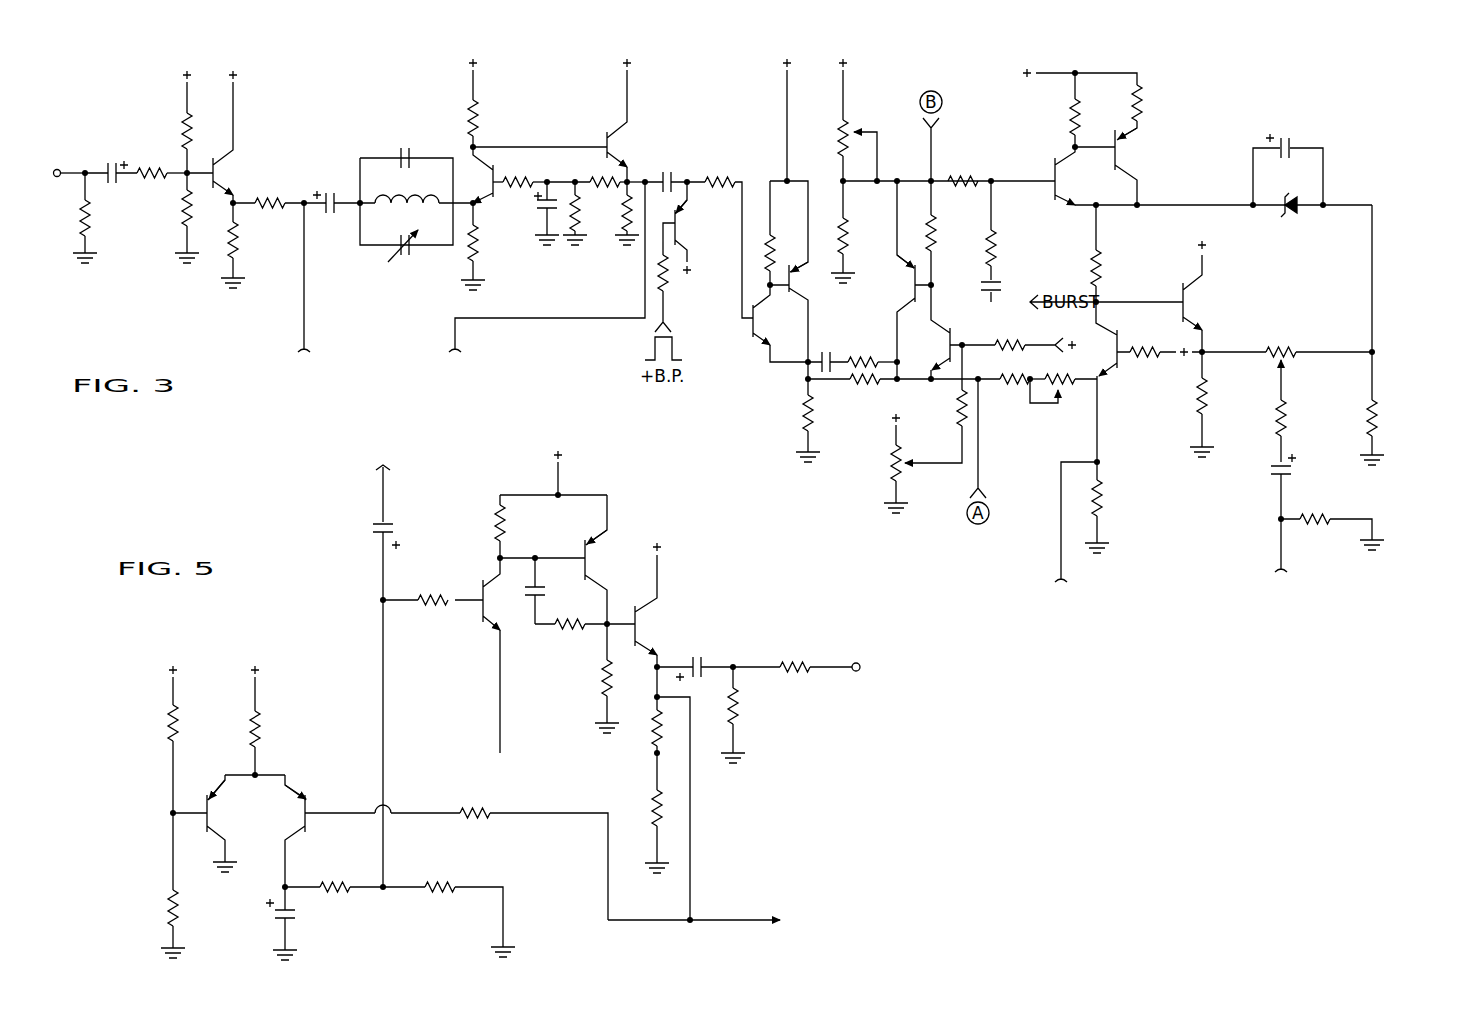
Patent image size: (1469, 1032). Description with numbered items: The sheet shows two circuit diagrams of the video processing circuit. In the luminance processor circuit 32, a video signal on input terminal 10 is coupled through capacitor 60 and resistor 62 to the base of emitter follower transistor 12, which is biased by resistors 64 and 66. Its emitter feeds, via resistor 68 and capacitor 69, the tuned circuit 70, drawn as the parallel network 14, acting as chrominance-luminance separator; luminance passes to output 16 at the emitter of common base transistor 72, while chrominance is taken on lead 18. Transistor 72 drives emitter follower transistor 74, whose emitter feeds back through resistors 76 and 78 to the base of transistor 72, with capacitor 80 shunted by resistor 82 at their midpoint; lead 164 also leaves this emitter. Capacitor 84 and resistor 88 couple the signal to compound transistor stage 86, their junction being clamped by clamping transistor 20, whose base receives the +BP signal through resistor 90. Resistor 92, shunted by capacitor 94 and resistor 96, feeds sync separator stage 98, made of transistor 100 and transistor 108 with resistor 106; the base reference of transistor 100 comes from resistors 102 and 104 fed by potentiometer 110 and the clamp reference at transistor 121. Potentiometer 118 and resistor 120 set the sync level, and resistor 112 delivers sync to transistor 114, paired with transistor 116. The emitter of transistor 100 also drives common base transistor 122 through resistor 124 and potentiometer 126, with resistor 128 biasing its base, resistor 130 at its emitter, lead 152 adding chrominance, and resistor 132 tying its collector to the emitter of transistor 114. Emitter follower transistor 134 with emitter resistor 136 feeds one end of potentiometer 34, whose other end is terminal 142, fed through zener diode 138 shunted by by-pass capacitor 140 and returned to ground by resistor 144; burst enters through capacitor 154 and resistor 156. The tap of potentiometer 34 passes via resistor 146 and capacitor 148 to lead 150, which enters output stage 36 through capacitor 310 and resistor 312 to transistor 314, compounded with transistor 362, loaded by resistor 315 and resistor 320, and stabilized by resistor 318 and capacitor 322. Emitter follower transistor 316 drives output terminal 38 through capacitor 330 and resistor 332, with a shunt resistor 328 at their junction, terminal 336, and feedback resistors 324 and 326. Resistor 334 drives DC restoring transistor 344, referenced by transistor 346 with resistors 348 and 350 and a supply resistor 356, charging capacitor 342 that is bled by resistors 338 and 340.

In FIG. 3, the input terminal 10 is at (58, 168).
In FIG. 3, the emitter follower transistor 12 is at (216, 179).
In FIG. 3, the tuned circuit 14 is at (406, 213).
In FIG. 3, the output 16 is at (462, 168).
In FIG. 3, the lead 18 is at (306, 290).
In FIG. 3, the clamping transistor 20 is at (694, 228).
In FIG. 3, the luminance processor circuit 32 is at (961, 254).
In FIG. 3, the potentiometer 34 is at (1282, 344).
In FIG. 5, the output stage 36 is at (633, 512).
In FIG. 5, the output terminal 38 is at (860, 658).
In FIG. 3, the capacitor 60 is at (112, 162).
In FIG. 3, the resistor 62 is at (150, 166).
In FIG. 3, the resistor 64 is at (196, 136).
In FIG. 3, the resistor 66 is at (180, 214).
In FIG. 3, the resistor 68 is at (266, 198).
In FIG. 3, the capacitor 69 is at (326, 196).
In FIG. 3, the tuned circuit 70 is at (421, 260).
In FIG. 3, the common base transistor stage 72 is at (490, 238).
In FIG. 3, the emitter follower transistor 74 is at (600, 137).
In FIG. 3, the resistor 76 is at (598, 200).
In FIG. 3, the resistor 78 is at (520, 164).
In FIG. 3, the capacitor 80 is at (535, 214).
In FIG. 3, the resistor 82 is at (566, 190).
In FIG. 3, the capacitor 84 is at (662, 172).
In FIG. 3, the compound transistor stage 86 is at (780, 280).
In FIG. 3, the resistor 88 is at (716, 172).
In FIG. 3, the resistor 90 is at (668, 288).
In FIG. 3, the resistor 92 is at (866, 386).
In FIG. 3, the capacitor 94 is at (822, 350).
In FIG. 3, the resistor 96 is at (864, 350).
In FIG. 3, the sync separator stage 98 is at (914, 280).
In FIG. 3, the transistor 100 is at (944, 322).
In FIG. 3, the resistor 102 is at (1012, 335).
In FIG. 3, the resistor 104 is at (948, 404).
In FIG. 3, the resistor 106 is at (938, 240).
In FIG. 3, the transistor 108 is at (897, 290).
In FIG. 3, the potentiometer 110 is at (886, 462).
In FIG. 3, the resistor 112 is at (960, 170).
In FIG. 3, the transistor 114 is at (1048, 166).
In FIG. 3, the transistor 116 is at (1130, 148).
In FIG. 3, the potentiometer 118 is at (838, 138).
In FIG. 3, the resistor 120 is at (852, 234).
In FIG. 3, the transistor 121 is at (680, 240).
In FIG. 3, the common base transistor 122 is at (1110, 380).
In FIG. 3, the resistor 124 is at (1004, 386).
In FIG. 3, the potentiometer 126 is at (1066, 388).
In FIG. 3, the resistor 128 is at (1146, 344).
In FIG. 3, the resistor 130 is at (1110, 500).
In FIG. 3, the resistor 132 is at (1108, 270).
In FIG. 3, the emitter follower transistor 134 is at (1198, 302).
In FIG. 3, the emitter resistor 136 is at (1208, 394).
In FIG. 3, the zener diode 138 is at (1290, 222).
In FIG. 3, the by-pass capacitor 140 is at (1284, 130).
In FIG. 3, the terminal 142 is at (1378, 352).
In FIG. 3, the resistor 144 is at (1378, 412).
In FIG. 3, the resistor 146 is at (1288, 412).
In FIG. 3, the capacitor 148 is at (1290, 476).
In FIG. 3, the lead 150 is at (1274, 545).
In FIG. 5, the lead 150 is at (370, 500).
In FIG. 3, the lead 152 is at (1054, 545).
In FIG. 3, the capacitor 154 is at (1008, 278).
In FIG. 3, the resistor 156 is at (1005, 246).
In FIG. 3, the lead 164 is at (568, 318).
In FIG. 5, the capacitor 310 is at (365, 526).
In FIG. 5, the resistor 312 is at (436, 586).
In FIG. 5, the transistor 314 is at (480, 614).
In FIG. 5, the resistor 315 is at (494, 520).
In FIG. 5, the emitter follower transistor 316 is at (632, 646).
In FIG. 5, the resistor 318 is at (570, 630).
In FIG. 5, the resistor 320 is at (600, 676).
In FIG. 5, the capacitor 322 is at (554, 598).
In FIG. 5, the resistor 324 is at (650, 728).
In FIG. 5, the resistor 326 is at (648, 798).
In FIG. 5, the resistor 328 is at (748, 708).
In FIG. 5, the capacitor 330 is at (696, 648).
In FIG. 5, the resistor 332 is at (802, 656).
In FIG. 5, the resistor 334 is at (472, 806).
In FIG. 5, the terminal 336 is at (690, 926).
In FIG. 5, the resistor 338 is at (440, 878).
In FIG. 5, the resistor 340 is at (336, 878).
In FIG. 5, the capacitor 342 is at (300, 918).
In FIG. 5, the transistor 344 is at (300, 786).
In FIG. 5, the transistor 346 is at (214, 780).
In FIG. 5, the resistor 348 is at (166, 908).
In FIG. 5, the resistor 350 is at (166, 732).
In FIG. 5, the resistor 356 is at (262, 728).
In FIG. 5, the transistor 362 is at (606, 558).